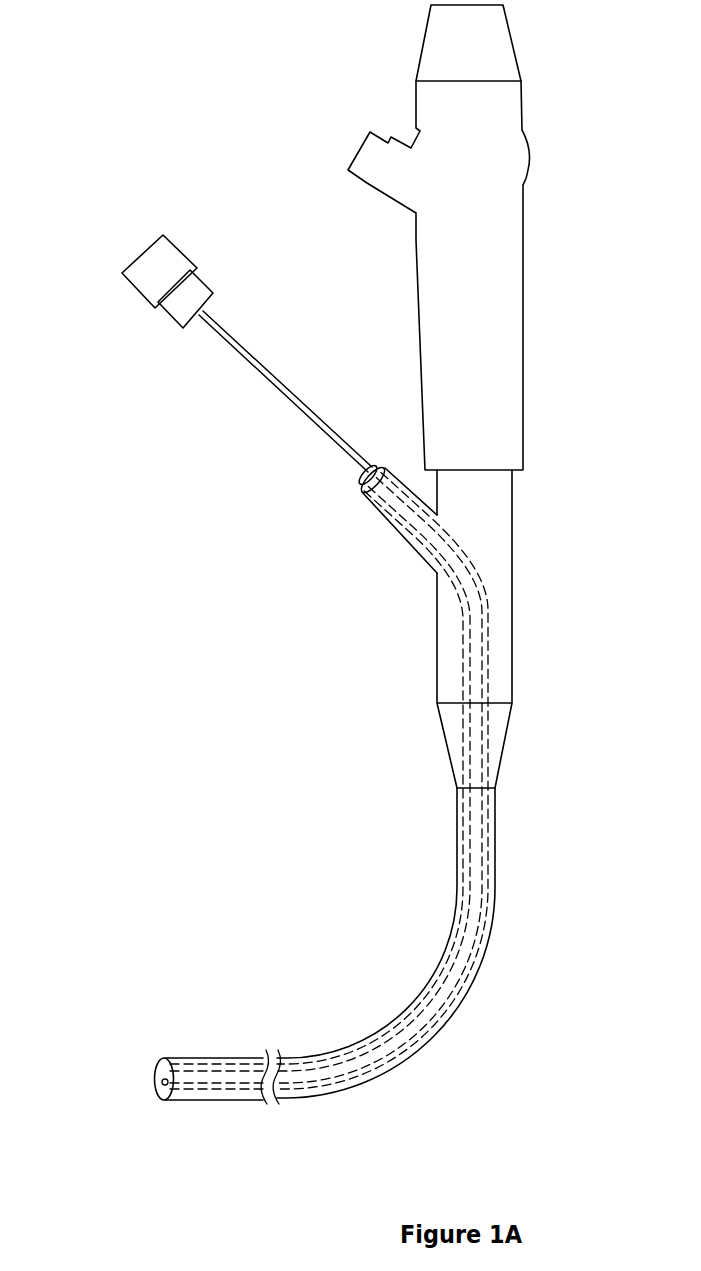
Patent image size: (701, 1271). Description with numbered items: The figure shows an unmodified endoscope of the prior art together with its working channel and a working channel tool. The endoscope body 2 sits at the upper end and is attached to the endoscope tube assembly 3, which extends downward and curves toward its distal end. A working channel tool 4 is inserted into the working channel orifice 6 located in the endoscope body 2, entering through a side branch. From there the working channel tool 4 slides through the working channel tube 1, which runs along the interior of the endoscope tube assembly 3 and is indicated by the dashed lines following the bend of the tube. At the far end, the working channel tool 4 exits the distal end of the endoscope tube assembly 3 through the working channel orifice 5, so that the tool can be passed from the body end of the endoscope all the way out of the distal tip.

The working channel tube 1 is at (483, 593).
The endoscope body 2 is at (533, 300).
The endoscope tube assembly 3 is at (490, 943).
The working channel tool 4 is at (243, 377).
The working channel orifice 5 is at (157, 1072).
The working channel orifice 6 is at (358, 500).